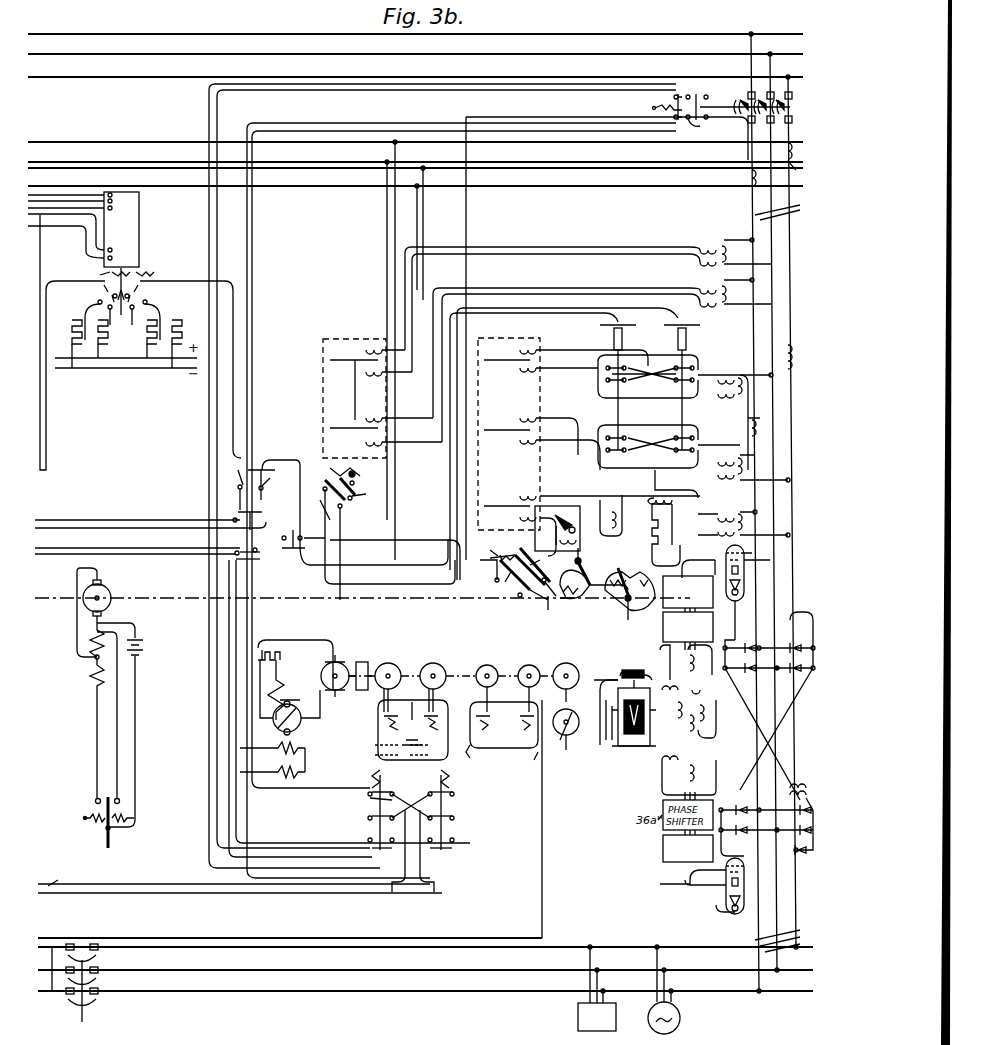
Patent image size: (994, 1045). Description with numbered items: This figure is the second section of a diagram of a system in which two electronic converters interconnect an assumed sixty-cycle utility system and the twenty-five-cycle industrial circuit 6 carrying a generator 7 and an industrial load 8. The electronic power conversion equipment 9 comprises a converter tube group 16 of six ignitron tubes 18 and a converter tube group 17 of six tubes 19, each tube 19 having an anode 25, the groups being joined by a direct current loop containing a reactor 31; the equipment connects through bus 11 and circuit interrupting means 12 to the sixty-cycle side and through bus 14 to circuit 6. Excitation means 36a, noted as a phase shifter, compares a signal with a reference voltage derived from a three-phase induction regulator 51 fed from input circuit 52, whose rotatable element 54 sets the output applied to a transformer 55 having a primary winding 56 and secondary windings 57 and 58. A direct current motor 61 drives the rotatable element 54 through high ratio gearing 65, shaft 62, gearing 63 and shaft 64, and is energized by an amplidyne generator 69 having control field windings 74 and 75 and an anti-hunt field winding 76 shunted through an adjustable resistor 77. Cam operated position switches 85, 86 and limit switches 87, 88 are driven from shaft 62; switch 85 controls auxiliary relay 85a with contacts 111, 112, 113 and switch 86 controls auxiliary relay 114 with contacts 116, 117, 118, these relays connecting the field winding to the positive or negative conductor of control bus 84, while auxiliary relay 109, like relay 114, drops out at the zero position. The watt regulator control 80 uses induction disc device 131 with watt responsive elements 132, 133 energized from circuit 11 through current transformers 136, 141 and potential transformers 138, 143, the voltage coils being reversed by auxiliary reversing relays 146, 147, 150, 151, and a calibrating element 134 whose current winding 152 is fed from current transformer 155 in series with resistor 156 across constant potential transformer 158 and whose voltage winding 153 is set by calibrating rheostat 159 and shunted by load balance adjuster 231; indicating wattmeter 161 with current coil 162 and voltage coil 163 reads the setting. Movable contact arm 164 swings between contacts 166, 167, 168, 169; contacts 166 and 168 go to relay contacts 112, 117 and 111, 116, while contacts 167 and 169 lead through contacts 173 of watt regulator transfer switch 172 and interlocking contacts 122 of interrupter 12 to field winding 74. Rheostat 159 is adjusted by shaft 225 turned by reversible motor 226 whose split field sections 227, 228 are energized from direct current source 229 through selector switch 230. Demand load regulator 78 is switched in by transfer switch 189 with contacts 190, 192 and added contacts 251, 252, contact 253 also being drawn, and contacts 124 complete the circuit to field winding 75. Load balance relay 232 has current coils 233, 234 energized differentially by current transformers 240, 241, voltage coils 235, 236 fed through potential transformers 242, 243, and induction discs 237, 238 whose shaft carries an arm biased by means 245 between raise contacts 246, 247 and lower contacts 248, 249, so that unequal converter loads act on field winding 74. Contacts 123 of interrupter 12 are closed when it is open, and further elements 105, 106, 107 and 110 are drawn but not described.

The demand load regulator 78 is at (164, 236).
The load balance relay 232 is at (354, 388).
The induction disc 237 is at (354, 381).
The current coil 233 is at (386, 357).
The voltage coil 235 is at (378, 376).
The induction disc 238 is at (353, 420).
The current coil 234 is at (382, 422).
The voltage coil 236 is at (355, 443).
The demand load regulator transfer switch 189 is at (280, 447).
The contacts 192 is at (260, 479).
The contacts 190 is at (275, 477).
The contacts 251 is at (257, 508).
The contacts 252 is at (257, 541).
The contact 253 is at (263, 558).
The watt regulator transfer switch 172 is at (304, 515).
The contacts 173 is at (297, 528).
The lower contact 248 is at (330, 485).
The biasing means 245 is at (371, 478).
The raise contact 246 is at (370, 494).
The raise contact 247 is at (356, 544).
The lower contact 249 is at (311, 485).
The shaft 225 is at (60, 597).
The reversible motor 226 is at (102, 590).
The field winding section 227 is at (106, 707).
The field winding section 228 is at (90, 676).
The source of direct current 229 is at (141, 652).
The selector switch 230 is at (112, 840).
The induction disc type device 131 is at (509, 424).
The watt responsive element 132 is at (509, 357).
The watt responsive element 133 is at (509, 418).
The calibrating element 134 is at (510, 494).
The current winding 152 is at (620, 482).
The voltage winding 153 is at (556, 521).
The auxiliary reversing relay 147 is at (604, 332).
The auxiliary reversing relay 146 is at (712, 330).
The auxiliary reversing relay 151 is at (644, 382).
The auxiliary reversing relay 150 is at (648, 444).
The potential transformer 242 is at (714, 244).
The potential transformer 243 is at (718, 284).
The bus 11 is at (766, 213).
The current transformer 136 is at (792, 348).
The potential transformer 138 is at (728, 380).
The current transformer 141 is at (746, 426).
The potential transformer 143 is at (730, 460).
The constant potential transformer 158 is at (732, 514).
The tube 18 is at (728, 548).
The converter tube group 16 is at (797, 642).
The electronic power conversion equipment 9 is at (752, 740).
The direct current reactor 31 is at (798, 778).
The converter tube group 17 is at (796, 826).
The tube 19 is at (736, 874).
The phase shifter 36a is at (662, 634).
The secondary winding 57 is at (686, 662).
The primary winding 56 is at (690, 712).
The transformer 55 is at (716, 749).
The secondary winding 58 is at (690, 776).
The three phase induction regulator 51 is at (634, 750).
The input circuit 52 is at (606, 752).
The gearing 63 is at (633, 663).
The rotatable element 54 is at (610, 682).
The shaft 64 is at (653, 684).
The indicating wattmeter 161 is at (557, 528).
The voltage coil 163 is at (585, 544).
The current coil 162 is at (616, 508).
The current transformer 155 is at (676, 496).
The resistor 156 is at (656, 536).
The adjustable resistor 159 is at (630, 594).
The adjustable resistor 231 is at (590, 573).
The movable contact arm 164 is at (628, 598).
The watt regulator control 80 is at (548, 599).
The contact 169 is at (488, 546).
The contact 167 is at (538, 579).
The contact 168 is at (484, 575).
The contact 166 is at (509, 603).
The direct current motor 61 is at (342, 662).
The high ratio gearing 65 is at (362, 690).
The cam operated position switch 85 is at (394, 655).
The cam operated position switch 86 is at (440, 655).
The shaft 62 is at (458, 672).
The limit switch 87 is at (496, 655).
The limit switch 88 is at (536, 655).
The generator 105 is at (558, 677).
The generator 106 is at (562, 706).
The contact 107 is at (562, 748).
The auxiliary relay 114 is at (430, 777).
The auxiliary relay 85a is at (387, 761).
The auxiliary relay 109 is at (490, 738).
The contact 110 is at (502, 755).
The adjustable resistor 77 is at (282, 650).
The anti-hunt field winding 76 is at (281, 690).
The amplidyne generator 69 is at (296, 728).
The control field winding 74 is at (281, 744).
The control field winding 75 is at (281, 768).
The contacts 111 is at (367, 796).
The contacts 112 is at (366, 818).
The contacts 113 is at (367, 846).
The contacts 116 is at (455, 788).
The contacts 117 is at (455, 811).
The contacts 118 is at (457, 837).
The control bus 84 is at (56, 876).
The alternating current circuit 6 is at (52, 998).
The industrial load 8 is at (578, 1021).
The dynamo-electric generator 7 is at (678, 1025).
The anode 25 is at (662, 1008).
The bus 14 is at (787, 941).
The circuit interrupting means 12 is at (788, 108).
The auxiliary contacts 124 is at (706, 97).
The auxiliary contacts 122 is at (708, 125).
The auxiliary contacts 123 is at (672, 98).
The current transformer 240 is at (802, 162).
The current transformer 241 is at (748, 176).